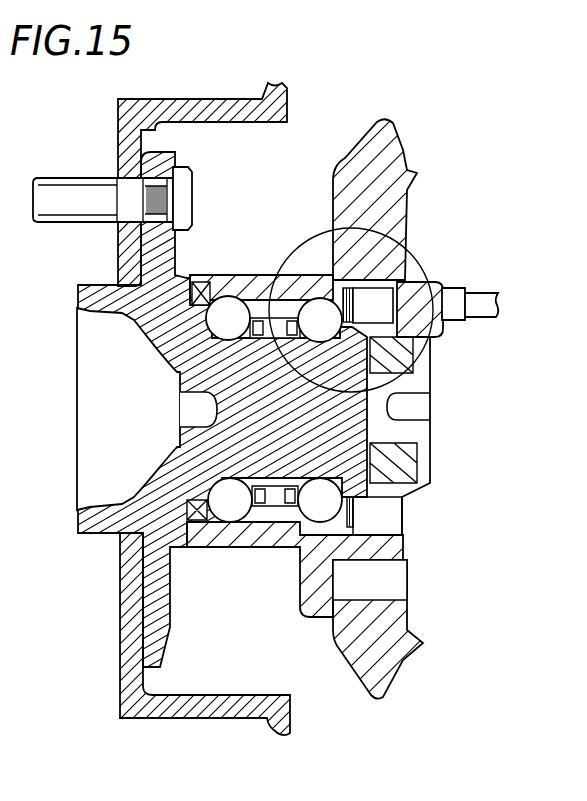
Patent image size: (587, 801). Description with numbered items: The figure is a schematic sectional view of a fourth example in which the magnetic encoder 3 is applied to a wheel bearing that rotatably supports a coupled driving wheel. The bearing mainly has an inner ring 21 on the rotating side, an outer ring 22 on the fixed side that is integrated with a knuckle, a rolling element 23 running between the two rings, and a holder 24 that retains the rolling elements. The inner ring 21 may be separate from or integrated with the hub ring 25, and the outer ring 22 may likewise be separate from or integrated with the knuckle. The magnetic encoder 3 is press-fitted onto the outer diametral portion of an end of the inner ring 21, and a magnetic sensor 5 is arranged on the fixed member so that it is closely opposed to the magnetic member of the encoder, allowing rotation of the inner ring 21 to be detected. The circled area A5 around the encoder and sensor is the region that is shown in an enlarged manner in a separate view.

The magnetic encoder 3 is at (322, 275).
The magnetic sensor 5 is at (372, 303).
The inner ring 21 is at (357, 345).
The outer ring 22 is at (180, 277).
The rolling element 23 is at (312, 305).
The holder 24 is at (265, 298).
The hub ring 25 is at (150, 587).
The area A5 is at (413, 262).